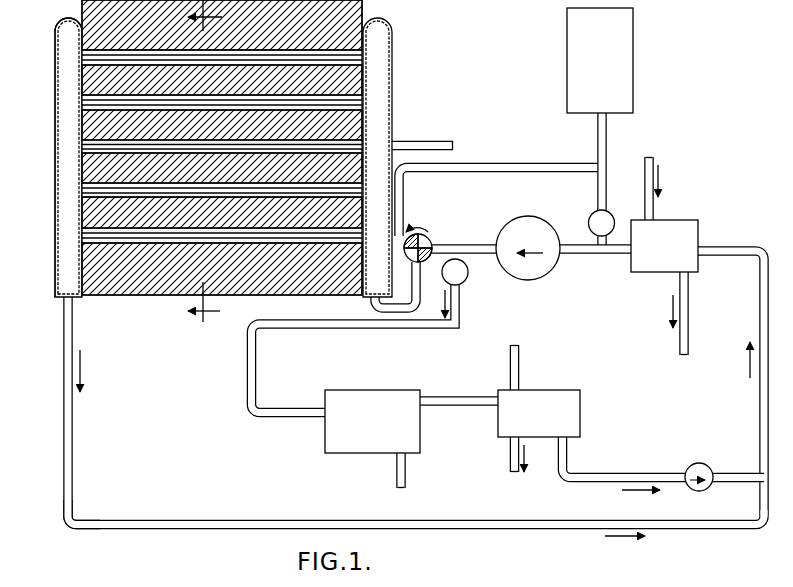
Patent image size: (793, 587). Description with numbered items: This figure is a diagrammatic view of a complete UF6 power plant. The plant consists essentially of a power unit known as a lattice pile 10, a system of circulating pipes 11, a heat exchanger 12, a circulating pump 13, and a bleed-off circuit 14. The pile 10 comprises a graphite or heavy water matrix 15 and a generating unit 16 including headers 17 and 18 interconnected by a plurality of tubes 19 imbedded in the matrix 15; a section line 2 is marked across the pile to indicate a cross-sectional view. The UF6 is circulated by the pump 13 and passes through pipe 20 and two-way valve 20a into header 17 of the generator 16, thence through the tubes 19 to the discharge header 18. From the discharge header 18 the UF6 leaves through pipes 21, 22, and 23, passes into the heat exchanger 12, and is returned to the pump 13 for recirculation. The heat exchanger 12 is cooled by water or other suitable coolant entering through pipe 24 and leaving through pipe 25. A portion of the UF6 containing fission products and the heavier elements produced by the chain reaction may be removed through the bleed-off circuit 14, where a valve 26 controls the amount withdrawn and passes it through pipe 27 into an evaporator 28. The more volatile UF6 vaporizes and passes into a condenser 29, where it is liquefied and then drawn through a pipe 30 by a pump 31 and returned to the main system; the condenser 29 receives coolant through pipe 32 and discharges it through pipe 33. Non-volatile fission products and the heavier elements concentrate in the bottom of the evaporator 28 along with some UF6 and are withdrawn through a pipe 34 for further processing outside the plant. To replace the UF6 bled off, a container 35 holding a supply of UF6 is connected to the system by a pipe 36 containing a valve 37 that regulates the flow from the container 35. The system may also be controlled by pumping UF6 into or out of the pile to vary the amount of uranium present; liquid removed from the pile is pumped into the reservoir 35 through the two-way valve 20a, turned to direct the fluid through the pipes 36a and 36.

The section line 2- 2 is at (211, 170).
The lattice pile 10 is at (396, 86).
The system of circulating pipes 11 is at (156, 514).
The heat exchanger 12 is at (681, 228).
The circulating pump 13 is at (510, 225).
The bleed-off circuit 14 is at (463, 315).
The graphite or heavy water matrix 15 is at (140, 278).
The generating unit 16 is at (54, 232).
The header 17 is at (372, 128).
The discharge header 18 is at (67, 173).
The tubes 19 is at (190, 236).
The pipe 20 is at (440, 238).
The two-way valve 20a is at (428, 228).
The pipe 21 is at (73, 437).
The pipe 22 is at (276, 518).
The pipe 23 is at (760, 317).
The pipe 24 is at (652, 160).
The pipe 25 is at (689, 298).
The valve 26 is at (465, 281).
The pipe 27 is at (312, 329).
The evaporator 28 is at (392, 397).
The condenser 29 is at (570, 405).
The pipe 30 is at (596, 479).
The pump 31 is at (707, 464).
The pipe 32 is at (520, 355).
The pipe 33 is at (511, 449).
The pipe 34 is at (405, 474).
The container 35 is at (613, 42).
The pipe 36 is at (597, 143).
The pipe 36a is at (507, 165).
The valve 37 is at (596, 213).